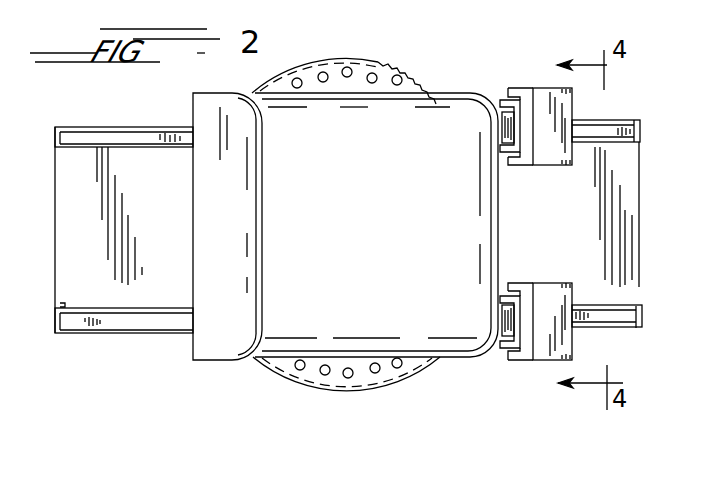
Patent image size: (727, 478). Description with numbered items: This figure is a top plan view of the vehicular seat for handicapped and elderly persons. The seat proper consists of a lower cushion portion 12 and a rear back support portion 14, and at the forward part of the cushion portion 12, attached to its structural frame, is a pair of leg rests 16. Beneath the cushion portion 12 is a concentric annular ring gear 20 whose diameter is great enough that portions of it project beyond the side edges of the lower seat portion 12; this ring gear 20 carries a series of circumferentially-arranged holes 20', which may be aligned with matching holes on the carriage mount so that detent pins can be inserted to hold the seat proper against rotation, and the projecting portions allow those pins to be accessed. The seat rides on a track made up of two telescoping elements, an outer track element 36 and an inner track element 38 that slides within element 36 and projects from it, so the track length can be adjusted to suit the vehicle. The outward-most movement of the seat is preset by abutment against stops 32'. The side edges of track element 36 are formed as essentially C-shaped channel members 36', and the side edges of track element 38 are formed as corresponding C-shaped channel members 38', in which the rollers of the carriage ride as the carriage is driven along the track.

The lower cushion portion 12 is at (375, 220).
The rear back support portion 14 is at (231, 233).
The leg rests 16 is at (558, 117).
The ring gear 20 is at (346, 198).
The holes 20' is at (347, 220).
The stops 32' is at (636, 213).
The track element 36 is at (110, 230).
The C-shaped channel members 36' is at (124, 228).
The track element 38 is at (586, 214).
The C-shaped channel members 38' is at (622, 340).